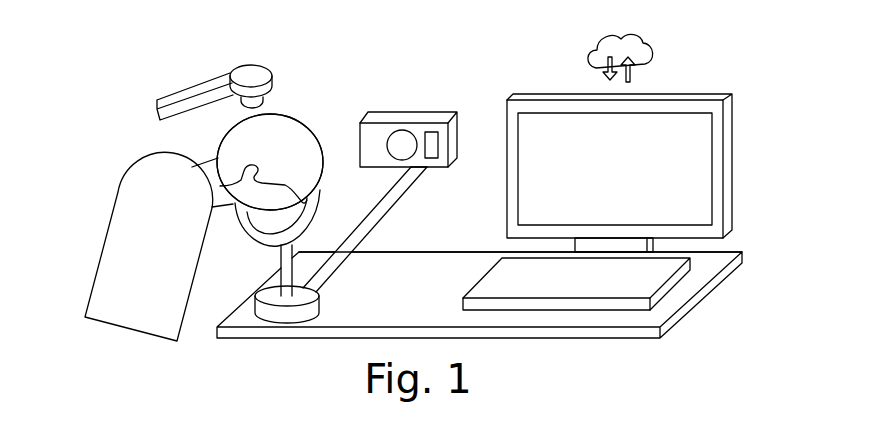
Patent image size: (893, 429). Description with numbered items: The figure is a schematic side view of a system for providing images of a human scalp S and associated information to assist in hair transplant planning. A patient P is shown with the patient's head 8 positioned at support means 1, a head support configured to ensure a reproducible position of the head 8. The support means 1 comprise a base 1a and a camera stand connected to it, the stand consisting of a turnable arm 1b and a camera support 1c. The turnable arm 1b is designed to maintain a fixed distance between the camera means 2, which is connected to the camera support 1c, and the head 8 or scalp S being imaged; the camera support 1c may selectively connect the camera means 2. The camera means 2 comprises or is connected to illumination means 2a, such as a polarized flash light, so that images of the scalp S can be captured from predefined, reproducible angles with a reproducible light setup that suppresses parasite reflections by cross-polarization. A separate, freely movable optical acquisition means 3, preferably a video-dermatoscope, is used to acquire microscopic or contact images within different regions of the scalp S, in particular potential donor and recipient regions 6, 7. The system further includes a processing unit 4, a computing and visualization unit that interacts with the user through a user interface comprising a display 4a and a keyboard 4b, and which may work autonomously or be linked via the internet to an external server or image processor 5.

The support means 1 is at (287, 239).
The base 1a is at (311, 309).
The turnable arm 1b is at (378, 212).
The camera support 1c is at (423, 176).
The camera means 2 is at (375, 139).
The illumination means 2a is at (434, 138).
The optical acquisition means 3 is at (241, 74).
The processing unit 4 is at (591, 185).
The display 4a is at (526, 230).
The keyboard 4b is at (576, 284).
The external server or image processor 5 is at (627, 58).
The donor region 6 is at (232, 150).
The recipient region 7 is at (313, 138).
The patient's head 8 is at (282, 116).
The patient P is at (159, 246).
The scalp S is at (272, 153).